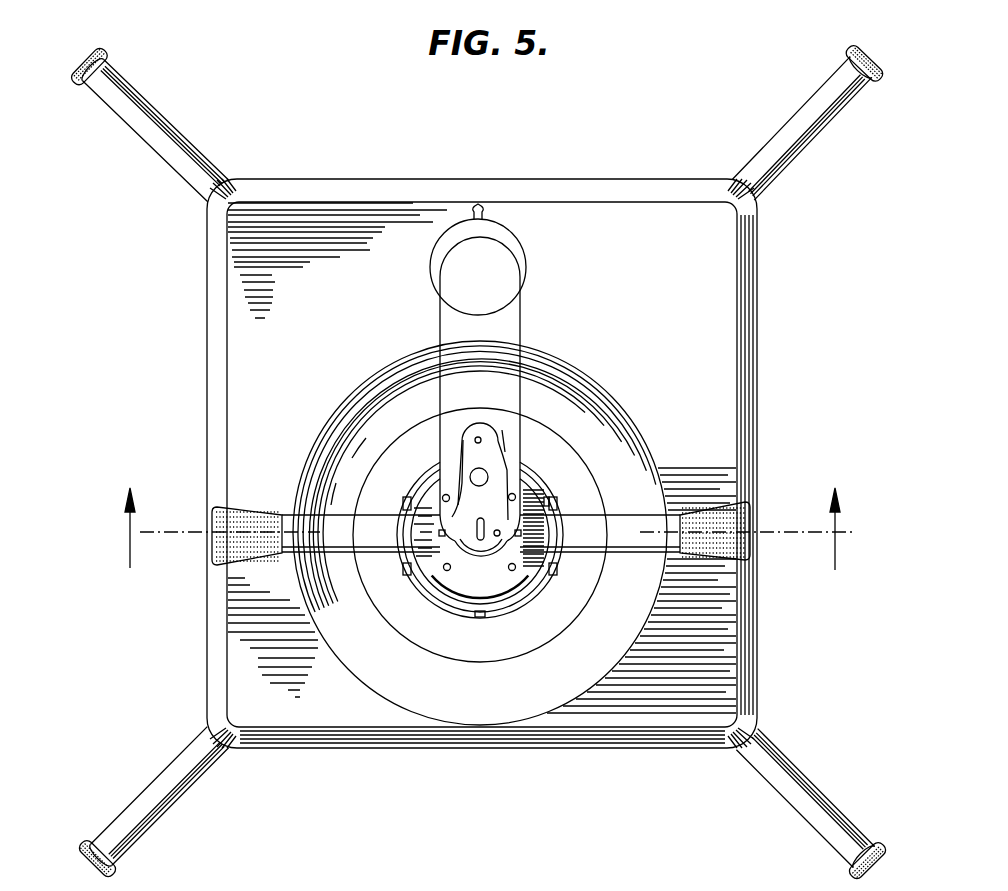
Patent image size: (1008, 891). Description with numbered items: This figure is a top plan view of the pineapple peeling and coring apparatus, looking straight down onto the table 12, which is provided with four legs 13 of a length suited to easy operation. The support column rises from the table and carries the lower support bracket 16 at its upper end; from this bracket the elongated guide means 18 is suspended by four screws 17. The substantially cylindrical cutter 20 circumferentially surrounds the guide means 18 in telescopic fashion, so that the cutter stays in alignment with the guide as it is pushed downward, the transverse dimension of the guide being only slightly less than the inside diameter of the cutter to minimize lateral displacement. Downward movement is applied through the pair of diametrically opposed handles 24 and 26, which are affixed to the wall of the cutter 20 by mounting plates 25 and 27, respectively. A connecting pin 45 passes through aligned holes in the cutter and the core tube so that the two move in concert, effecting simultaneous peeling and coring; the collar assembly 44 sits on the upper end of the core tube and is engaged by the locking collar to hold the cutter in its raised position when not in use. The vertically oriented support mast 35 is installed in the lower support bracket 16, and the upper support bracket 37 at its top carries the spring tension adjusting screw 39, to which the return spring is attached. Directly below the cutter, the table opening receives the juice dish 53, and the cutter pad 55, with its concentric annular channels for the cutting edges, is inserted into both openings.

The table 12 is at (358, 292).
The legs 13 is at (181, 148).
The lower support bracket 16 is at (468, 307).
The screws 17 is at (444, 496).
The guide means 18 is at (546, 502).
The cylindrical cutter 20 is at (485, 542).
The handle 24 is at (268, 527).
The mounting plate 25 is at (407, 500).
The handle 26 is at (696, 528).
The mounting plate 27 is at (556, 503).
The support mast 35 is at (463, 440).
The upper support bracket 37 is at (502, 430).
The spring tension adjusting screw 39 is at (549, 570).
The collar assembly 44 is at (440, 560).
The connecting pin 45 is at (478, 617).
The juice dish 53 is at (533, 698).
The cutter pad 55 is at (450, 643).